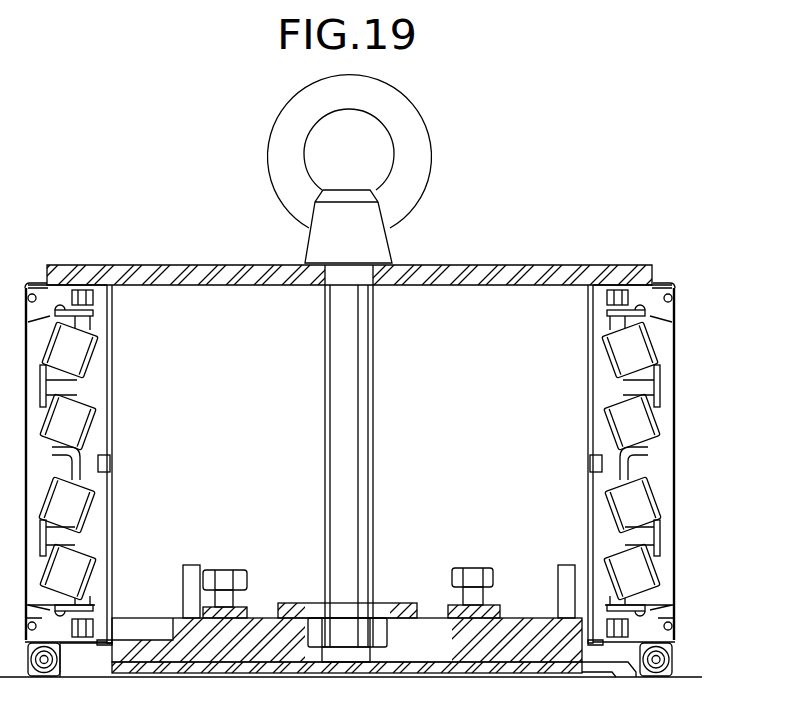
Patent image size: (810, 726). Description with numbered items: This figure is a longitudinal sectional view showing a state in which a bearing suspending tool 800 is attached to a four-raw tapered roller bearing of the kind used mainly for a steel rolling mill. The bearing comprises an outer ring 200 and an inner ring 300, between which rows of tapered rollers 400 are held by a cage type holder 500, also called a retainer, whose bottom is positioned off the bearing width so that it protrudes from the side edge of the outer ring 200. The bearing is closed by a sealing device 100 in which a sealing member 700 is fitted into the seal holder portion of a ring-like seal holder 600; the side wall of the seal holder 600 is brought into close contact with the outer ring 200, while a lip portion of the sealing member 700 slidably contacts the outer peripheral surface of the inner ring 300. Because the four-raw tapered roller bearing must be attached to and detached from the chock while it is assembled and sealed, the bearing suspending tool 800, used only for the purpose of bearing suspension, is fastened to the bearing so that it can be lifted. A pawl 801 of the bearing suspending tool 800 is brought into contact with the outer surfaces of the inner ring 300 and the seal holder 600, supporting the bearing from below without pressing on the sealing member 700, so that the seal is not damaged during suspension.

The sealing device 100 is at (673, 613).
The outer ring 200 is at (675, 585).
The inner ring 300 is at (590, 492).
The roller 400 is at (657, 567).
The cage type holder 500 is at (650, 540).
The ring-like seal holder 600 is at (675, 633).
The sealing member 700 is at (620, 663).
The bearing suspending tool 800 is at (452, 643).
The pawl 801 is at (493, 662).